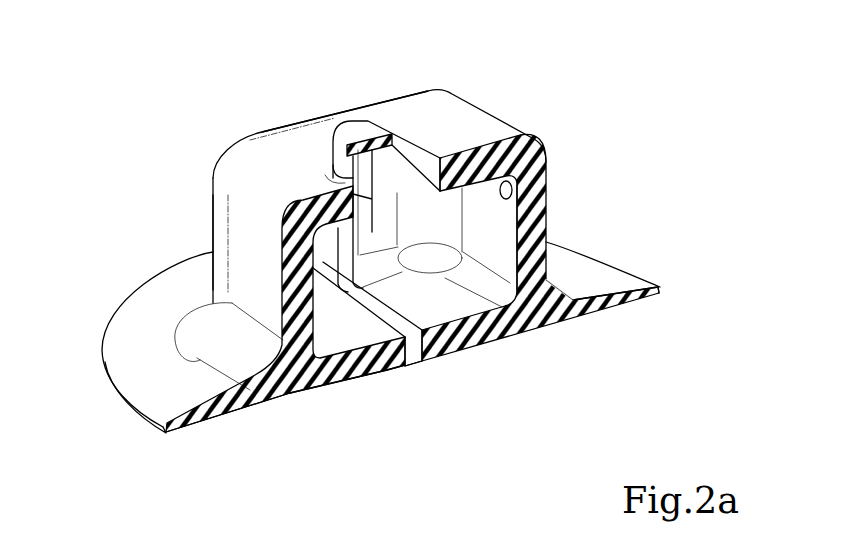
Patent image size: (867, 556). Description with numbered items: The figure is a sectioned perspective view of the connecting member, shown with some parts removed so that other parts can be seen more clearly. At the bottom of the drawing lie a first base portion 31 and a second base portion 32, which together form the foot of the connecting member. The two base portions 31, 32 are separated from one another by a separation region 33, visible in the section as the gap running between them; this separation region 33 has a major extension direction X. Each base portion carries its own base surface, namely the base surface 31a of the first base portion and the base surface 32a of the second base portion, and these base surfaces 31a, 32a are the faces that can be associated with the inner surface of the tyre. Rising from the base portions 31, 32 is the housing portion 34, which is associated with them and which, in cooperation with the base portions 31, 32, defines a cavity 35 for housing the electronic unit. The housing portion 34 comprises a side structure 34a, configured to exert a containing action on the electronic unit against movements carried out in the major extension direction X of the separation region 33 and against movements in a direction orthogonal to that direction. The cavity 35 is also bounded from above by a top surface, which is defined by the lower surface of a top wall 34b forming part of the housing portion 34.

The first base portion 31 is at (608, 277).
The base surface of the first base portion 31a is at (540, 328).
The second base portion 32 is at (155, 375).
The base surface of the second base portion 32a is at (305, 395).
The separation region 33 is at (413, 363).
The housing portion 34 is at (200, 128).
The side structure 34a is at (210, 208).
The top wall 34b is at (288, 148).
The cavity 35 is at (459, 226).